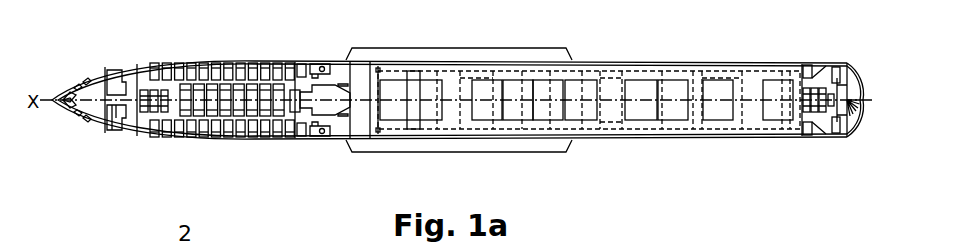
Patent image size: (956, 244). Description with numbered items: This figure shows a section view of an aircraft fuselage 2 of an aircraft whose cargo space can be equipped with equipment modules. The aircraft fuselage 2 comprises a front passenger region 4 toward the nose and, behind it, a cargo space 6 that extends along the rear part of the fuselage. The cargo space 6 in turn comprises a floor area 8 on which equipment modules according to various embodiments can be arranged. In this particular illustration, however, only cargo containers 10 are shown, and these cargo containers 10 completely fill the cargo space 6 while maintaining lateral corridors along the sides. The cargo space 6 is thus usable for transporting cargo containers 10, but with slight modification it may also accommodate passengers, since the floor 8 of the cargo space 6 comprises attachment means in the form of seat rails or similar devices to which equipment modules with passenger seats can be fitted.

The aircraft fuselage 2 is at (183, 52).
The front passenger region 4 is at (236, 146).
The cargo space 6 is at (622, 133).
The floor area 8 is at (535, 130).
The cargo containers 10 is at (587, 110).